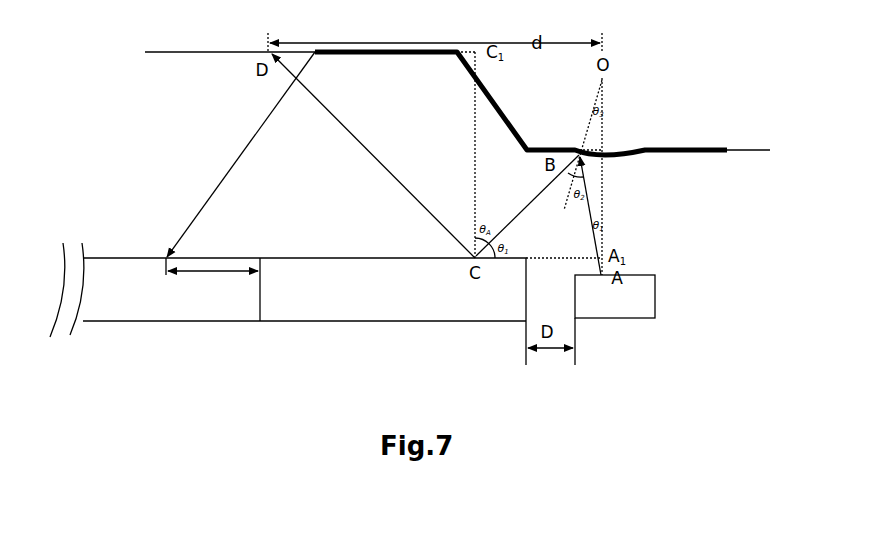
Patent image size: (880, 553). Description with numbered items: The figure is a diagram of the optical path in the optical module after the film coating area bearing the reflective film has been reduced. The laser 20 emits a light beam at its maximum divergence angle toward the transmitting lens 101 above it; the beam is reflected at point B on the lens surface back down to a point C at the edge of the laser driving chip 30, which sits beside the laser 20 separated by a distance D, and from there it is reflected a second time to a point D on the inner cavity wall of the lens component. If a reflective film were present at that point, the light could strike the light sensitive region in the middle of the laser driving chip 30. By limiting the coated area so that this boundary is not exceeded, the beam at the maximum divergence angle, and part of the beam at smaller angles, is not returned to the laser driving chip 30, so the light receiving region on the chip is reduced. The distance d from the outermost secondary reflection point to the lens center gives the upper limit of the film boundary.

The transmitting lens 101 is at (635, 157).
The laser driving chip 30 is at (355, 321).
The laser 20 is at (628, 318).